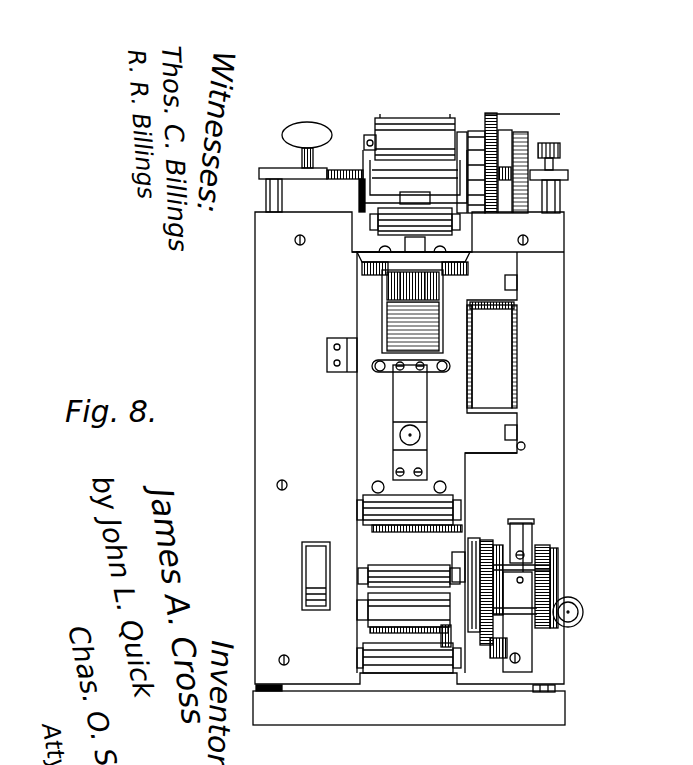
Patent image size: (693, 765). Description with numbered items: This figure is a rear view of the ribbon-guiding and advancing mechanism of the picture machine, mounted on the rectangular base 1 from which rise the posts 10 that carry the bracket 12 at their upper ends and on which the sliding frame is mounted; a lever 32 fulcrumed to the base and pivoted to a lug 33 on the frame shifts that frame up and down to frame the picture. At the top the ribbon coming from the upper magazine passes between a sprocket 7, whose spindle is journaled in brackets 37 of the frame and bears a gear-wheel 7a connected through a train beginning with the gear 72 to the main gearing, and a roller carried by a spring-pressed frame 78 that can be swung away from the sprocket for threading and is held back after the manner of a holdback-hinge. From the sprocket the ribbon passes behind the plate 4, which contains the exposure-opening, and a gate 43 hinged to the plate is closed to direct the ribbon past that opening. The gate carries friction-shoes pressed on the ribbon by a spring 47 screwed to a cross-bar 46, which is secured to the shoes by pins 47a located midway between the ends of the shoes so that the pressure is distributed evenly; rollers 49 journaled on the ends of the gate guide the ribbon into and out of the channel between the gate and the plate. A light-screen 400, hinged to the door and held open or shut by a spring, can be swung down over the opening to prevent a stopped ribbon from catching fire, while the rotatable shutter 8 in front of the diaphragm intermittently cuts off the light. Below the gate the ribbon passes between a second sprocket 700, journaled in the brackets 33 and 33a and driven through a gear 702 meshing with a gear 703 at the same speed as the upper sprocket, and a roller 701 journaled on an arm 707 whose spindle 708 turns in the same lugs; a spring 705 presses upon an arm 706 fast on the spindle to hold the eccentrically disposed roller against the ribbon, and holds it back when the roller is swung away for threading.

The base 1 is at (409, 708).
The plate 4 is at (565, 350).
The sprocket 7 is at (415, 163).
The gear-wheel 7a is at (540, 112).
The rotatable shutter 8 is at (400, 293).
The posts 10 is at (272, 180).
The bracket 12 is at (274, 168).
The lever 32 is at (584, 612).
The lug 33 is at (552, 547).
The bracket 33a is at (476, 538).
The brackets 37 is at (480, 124).
The gate 43 is at (480, 438).
The cross-bar 46 is at (388, 370).
The spring 47 is at (409, 429).
The pins 47a is at (385, 367).
The rollers 49 is at (375, 230).
The gear 72 is at (568, 178).
The frame 78 is at (362, 172).
The light-screen 400 is at (478, 253).
The second sprocket 700 is at (445, 612).
The roller 701 is at (412, 557).
The gear 702 is at (490, 642).
The gear 703 is at (523, 523).
The spring 705 is at (527, 530).
The arm 706 is at (540, 527).
The arm 707 is at (467, 538).
The spindle 708 is at (532, 566).